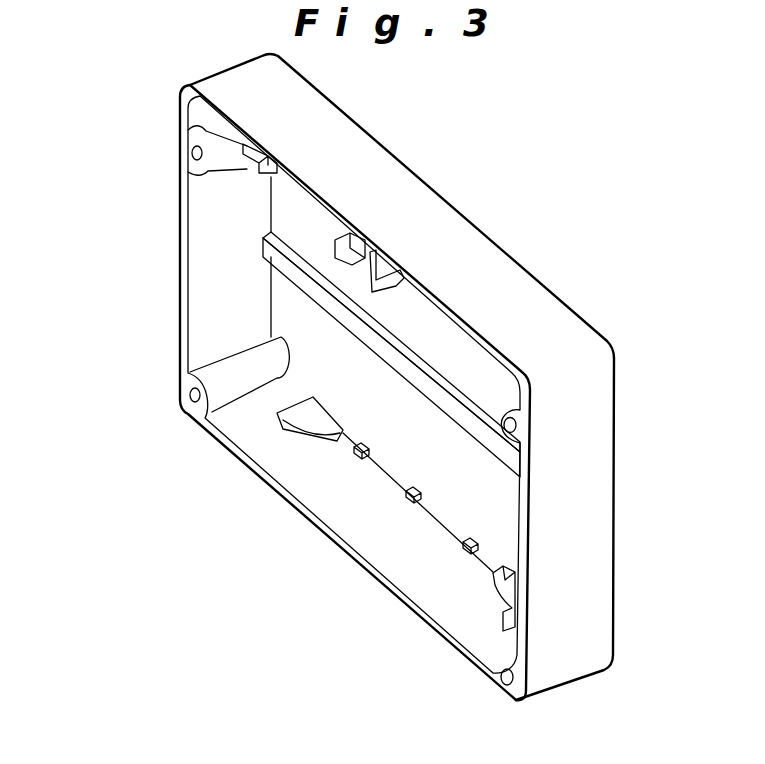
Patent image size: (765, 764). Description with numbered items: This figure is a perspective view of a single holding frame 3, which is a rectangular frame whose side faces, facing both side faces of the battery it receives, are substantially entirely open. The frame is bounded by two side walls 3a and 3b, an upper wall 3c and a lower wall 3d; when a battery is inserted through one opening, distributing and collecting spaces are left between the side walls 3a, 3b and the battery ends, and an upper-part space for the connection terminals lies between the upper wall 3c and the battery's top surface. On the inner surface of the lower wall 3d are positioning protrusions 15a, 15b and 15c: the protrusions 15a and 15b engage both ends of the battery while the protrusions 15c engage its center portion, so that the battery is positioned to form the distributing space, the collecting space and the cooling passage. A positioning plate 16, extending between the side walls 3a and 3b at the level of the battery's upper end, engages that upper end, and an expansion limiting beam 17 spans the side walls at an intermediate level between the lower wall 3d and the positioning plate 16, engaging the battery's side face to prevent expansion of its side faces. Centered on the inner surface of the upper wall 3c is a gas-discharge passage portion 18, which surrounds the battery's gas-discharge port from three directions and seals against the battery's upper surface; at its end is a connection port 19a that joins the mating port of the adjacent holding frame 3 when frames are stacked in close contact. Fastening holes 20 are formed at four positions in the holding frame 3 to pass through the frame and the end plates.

The holding frame 3 is at (170, 244).
The side wall 3a is at (566, 548).
The side wall 3b is at (210, 283).
The upper wall 3c is at (500, 292).
The lower wall 3d is at (375, 538).
The positioning protrusion 15a is at (500, 586).
The positioning protrusion 15b is at (280, 425).
The positioning protrusions 15c is at (403, 497).
The positioning plate 16 is at (262, 166).
The expansion limiting beam 17 is at (431, 385).
The gas-discharge passage portion 18 is at (380, 272).
The connection port 19a is at (350, 240).
The fastening holes 20 is at (192, 153).